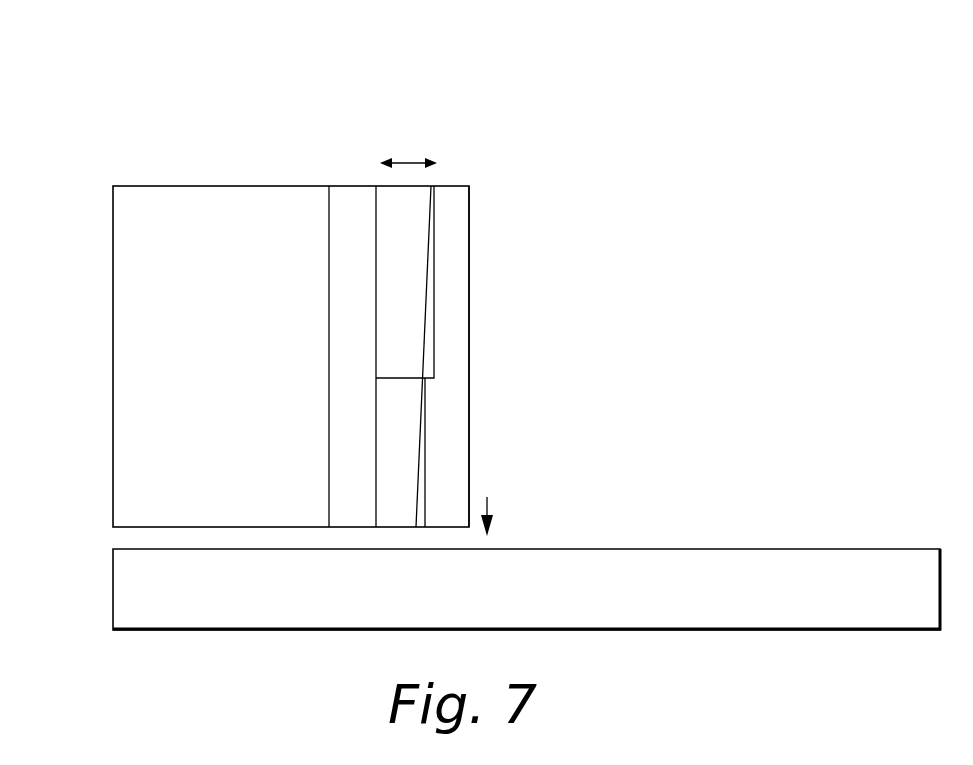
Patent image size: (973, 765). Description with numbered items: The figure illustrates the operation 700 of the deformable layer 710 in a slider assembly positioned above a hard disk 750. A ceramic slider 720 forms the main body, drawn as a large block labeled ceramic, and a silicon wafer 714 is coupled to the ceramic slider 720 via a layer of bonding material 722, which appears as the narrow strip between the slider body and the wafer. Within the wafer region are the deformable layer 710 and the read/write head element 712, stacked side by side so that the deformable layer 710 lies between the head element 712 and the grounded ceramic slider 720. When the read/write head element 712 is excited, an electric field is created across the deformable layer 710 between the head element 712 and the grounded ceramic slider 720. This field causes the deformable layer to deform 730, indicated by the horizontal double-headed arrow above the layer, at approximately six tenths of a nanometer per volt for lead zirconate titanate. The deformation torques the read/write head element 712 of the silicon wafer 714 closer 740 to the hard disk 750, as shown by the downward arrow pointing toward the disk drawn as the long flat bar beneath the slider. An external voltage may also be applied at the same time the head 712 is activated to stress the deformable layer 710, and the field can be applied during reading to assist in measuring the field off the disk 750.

The operation of the deformable layer 700 is at (605, 113).
The deformable layer 710 is at (415, 215).
The read/write head element 712 is at (405, 452).
The silicon wafer 714 is at (453, 327).
The ceramic slider 720 is at (117, 380).
The bonding material 722 is at (348, 196).
The deformation of the deformable layer 730 is at (408, 162).
The movement closer to the hard disk 740 is at (490, 508).
The hard disk 750 is at (125, 600).